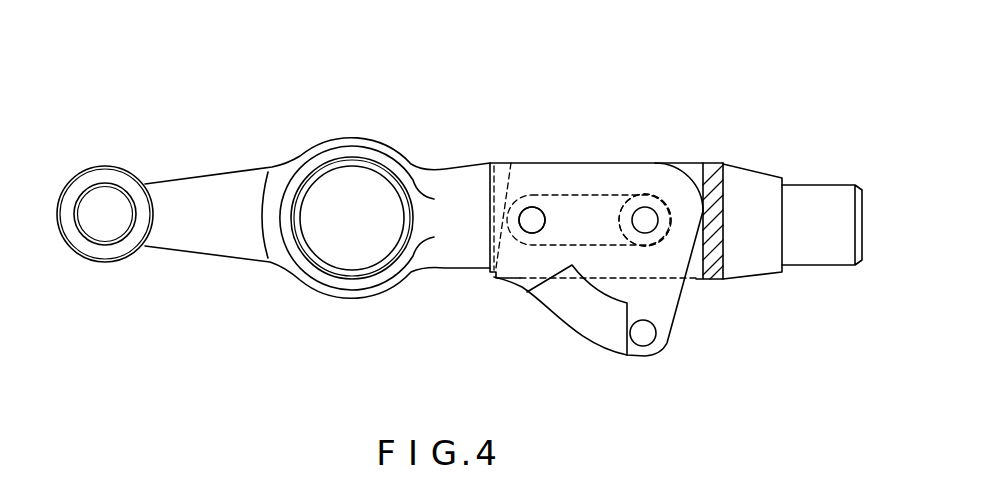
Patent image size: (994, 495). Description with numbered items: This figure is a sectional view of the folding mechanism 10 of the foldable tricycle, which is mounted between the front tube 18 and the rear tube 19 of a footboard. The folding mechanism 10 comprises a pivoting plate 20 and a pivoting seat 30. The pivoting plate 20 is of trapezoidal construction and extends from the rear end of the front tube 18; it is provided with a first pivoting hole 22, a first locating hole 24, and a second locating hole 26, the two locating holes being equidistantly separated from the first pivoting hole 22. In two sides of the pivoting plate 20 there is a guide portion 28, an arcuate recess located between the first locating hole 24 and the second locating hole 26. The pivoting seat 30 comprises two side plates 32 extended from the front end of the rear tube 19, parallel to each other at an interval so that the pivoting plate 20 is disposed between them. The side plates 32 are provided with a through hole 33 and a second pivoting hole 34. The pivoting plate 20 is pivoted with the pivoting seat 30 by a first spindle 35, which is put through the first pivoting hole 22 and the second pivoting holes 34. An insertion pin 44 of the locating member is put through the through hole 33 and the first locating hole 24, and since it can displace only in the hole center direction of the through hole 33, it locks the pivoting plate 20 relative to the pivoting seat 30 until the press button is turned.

The folding mechanism 10 is at (486, 78).
The front tube 18 is at (434, 178).
The rear tube 19 is at (815, 193).
The pivoting plate 20 is at (667, 303).
The first pivoting hole 22 is at (643, 200).
The first locating hole 24 is at (532, 207).
The second locating hole 26 is at (648, 348).
The guide portion 28 is at (577, 325).
The pivoting seat 30 is at (745, 280).
The side plate 32 is at (690, 163).
The through hole 33 is at (547, 168).
The second pivoting hole 34 is at (661, 175).
The first spindle 35 is at (633, 218).
The insertion pin 44 is at (528, 222).